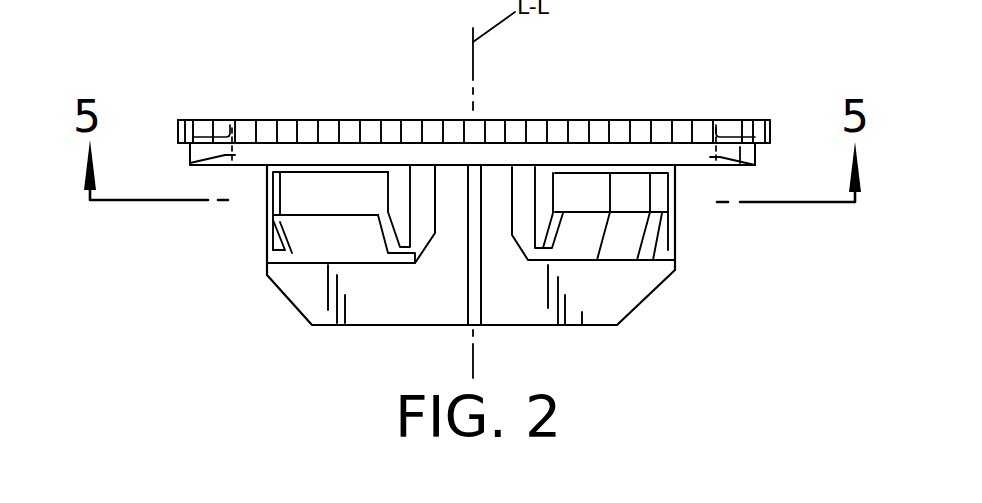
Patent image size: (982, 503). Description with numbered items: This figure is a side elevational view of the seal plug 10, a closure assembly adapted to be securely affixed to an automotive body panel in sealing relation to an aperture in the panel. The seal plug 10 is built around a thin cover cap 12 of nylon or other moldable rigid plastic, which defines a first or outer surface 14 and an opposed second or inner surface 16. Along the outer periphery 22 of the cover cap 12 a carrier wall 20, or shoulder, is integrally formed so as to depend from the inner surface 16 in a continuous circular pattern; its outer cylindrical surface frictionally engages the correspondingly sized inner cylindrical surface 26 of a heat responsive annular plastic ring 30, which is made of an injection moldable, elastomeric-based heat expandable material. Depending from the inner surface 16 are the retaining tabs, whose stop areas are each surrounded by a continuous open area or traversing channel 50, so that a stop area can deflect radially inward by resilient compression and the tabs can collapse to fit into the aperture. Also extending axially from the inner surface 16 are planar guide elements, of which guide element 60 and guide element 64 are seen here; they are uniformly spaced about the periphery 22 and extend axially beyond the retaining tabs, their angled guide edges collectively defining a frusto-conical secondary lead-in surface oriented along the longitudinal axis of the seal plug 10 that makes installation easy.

The seal plug 10 is at (238, 289).
The cover cap 12 is at (598, 120).
The first or outer surface 14 is at (275, 120).
The second or inner surface 16 is at (250, 170).
The carrier wall 20 is at (233, 125).
The outer periphery 22 is at (699, 186).
The inner cylindrical surface 26 is at (203, 168).
The heat responsive annular plastic ring 30 is at (190, 160).
The traversing channel 50 is at (398, 178).
The guide element 60 is at (392, 305).
The guide element 64 is at (609, 305).